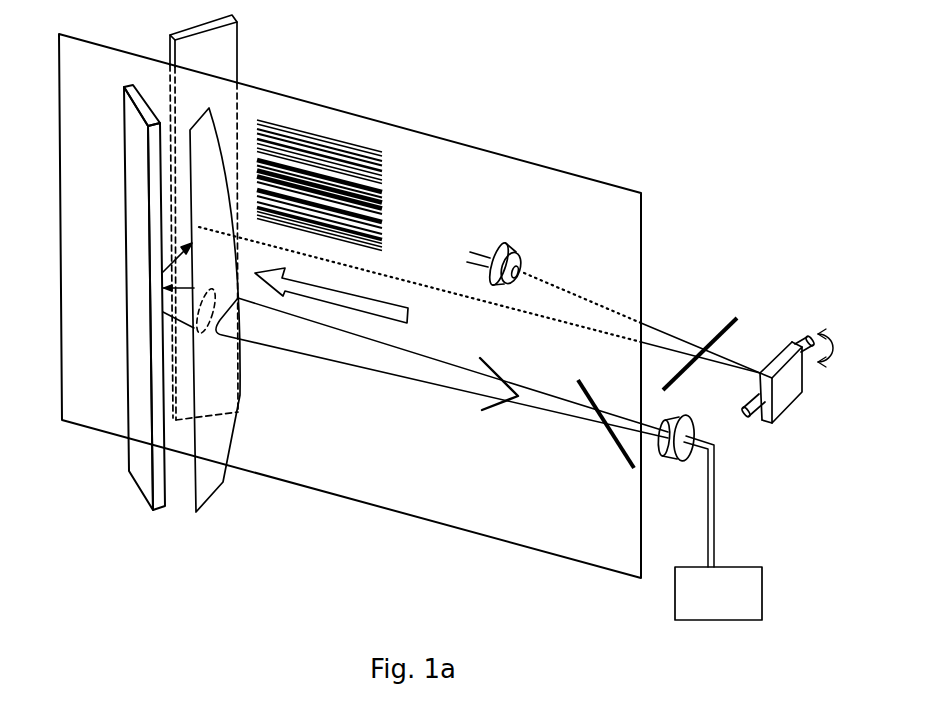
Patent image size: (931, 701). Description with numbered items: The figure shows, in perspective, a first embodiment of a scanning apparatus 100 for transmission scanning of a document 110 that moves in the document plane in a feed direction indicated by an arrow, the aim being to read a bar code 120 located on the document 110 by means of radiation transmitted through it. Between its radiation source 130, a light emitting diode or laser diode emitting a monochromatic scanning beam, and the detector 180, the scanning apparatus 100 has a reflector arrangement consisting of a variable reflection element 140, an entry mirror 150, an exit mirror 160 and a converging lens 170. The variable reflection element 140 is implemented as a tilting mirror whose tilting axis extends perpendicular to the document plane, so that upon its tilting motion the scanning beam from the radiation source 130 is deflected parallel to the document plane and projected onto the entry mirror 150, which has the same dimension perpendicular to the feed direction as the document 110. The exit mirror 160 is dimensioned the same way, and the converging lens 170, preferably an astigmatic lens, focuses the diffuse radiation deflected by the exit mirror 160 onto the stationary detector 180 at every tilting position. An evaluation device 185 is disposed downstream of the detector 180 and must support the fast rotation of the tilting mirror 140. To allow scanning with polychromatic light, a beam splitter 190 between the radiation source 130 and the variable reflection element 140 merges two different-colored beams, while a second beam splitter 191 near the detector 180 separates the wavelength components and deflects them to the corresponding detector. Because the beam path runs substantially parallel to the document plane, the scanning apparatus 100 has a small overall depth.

The scanning apparatus 100 is at (488, 71).
The document 110 is at (513, 157).
The bar code 120 is at (383, 203).
The radiation source 130 is at (510, 246).
The variable reflection element 140 is at (790, 421).
The entry mirror 150 is at (204, 217).
The exit mirror 160 is at (143, 470).
The converging lens 170 is at (207, 485).
The detector 180 is at (677, 462).
The evaluation device 185 is at (762, 598).
The beam splitter 190 is at (735, 315).
The beam splitter 191 is at (613, 451).